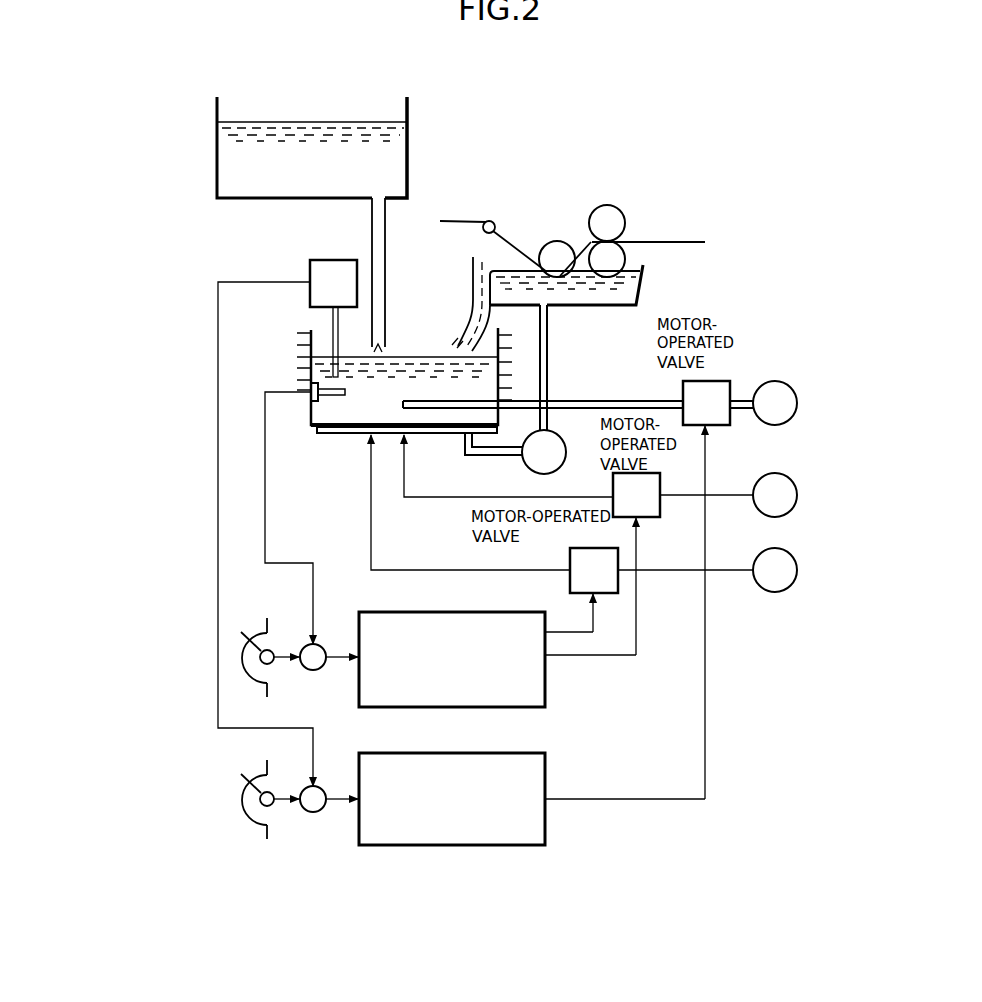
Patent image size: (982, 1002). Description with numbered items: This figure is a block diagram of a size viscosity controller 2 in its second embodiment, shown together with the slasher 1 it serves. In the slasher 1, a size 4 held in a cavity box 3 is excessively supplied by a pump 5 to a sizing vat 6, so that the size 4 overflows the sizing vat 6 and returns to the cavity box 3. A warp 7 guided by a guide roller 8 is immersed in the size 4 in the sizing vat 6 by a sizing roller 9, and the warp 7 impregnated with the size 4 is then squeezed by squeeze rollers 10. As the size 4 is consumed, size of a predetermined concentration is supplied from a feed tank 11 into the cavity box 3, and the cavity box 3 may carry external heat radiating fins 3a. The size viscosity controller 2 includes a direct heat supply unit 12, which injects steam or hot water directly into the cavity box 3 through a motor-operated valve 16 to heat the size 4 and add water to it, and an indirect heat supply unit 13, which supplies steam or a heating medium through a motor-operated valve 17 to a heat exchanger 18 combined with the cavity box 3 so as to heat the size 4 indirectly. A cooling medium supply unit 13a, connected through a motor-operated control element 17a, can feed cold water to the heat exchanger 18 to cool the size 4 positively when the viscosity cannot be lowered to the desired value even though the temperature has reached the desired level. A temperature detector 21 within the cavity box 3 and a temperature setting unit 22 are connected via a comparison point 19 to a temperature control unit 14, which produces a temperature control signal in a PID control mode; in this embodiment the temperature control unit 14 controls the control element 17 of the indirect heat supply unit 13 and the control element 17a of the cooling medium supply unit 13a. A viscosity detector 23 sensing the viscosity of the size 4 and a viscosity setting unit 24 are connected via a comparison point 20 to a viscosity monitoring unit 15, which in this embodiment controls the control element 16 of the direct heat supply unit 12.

The slasher 1 is at (652, 187).
The size viscosity controller 2 is at (198, 493).
The cavity box 3 is at (504, 367).
The external heat radiating fins 3a is at (500, 335).
The size 4 is at (290, 120).
The pump 5 is at (524, 463).
The sizing vat 6 is at (583, 307).
The warp 7 is at (677, 241).
The guide roller 8 is at (482, 229).
The sizing roller 9 is at (553, 241).
The squeeze rollers 10 is at (604, 205).
The feed tank 11 is at (409, 157).
The direct heat supply unit 12 is at (804, 401).
The indirect heat supply unit 13 is at (797, 495).
The cooling medium supply unit 13a is at (797, 573).
The temperature control unit 14 is at (490, 612).
The viscosity monitoring unit 15 is at (490, 753).
The motor-operated valve 16 is at (682, 389).
The motor-operated valve 17 is at (660, 490).
The motor-operated control element 17a is at (569, 562).
The heat exchanger 18 is at (353, 437).
The comparison point 19 is at (312, 671).
The comparison point 20 is at (312, 813).
The temperature detector 21 is at (309, 388).
The temperature setting unit 22 is at (256, 680).
The viscosity detector 23 is at (309, 262).
The viscosity setting unit 24 is at (256, 822).